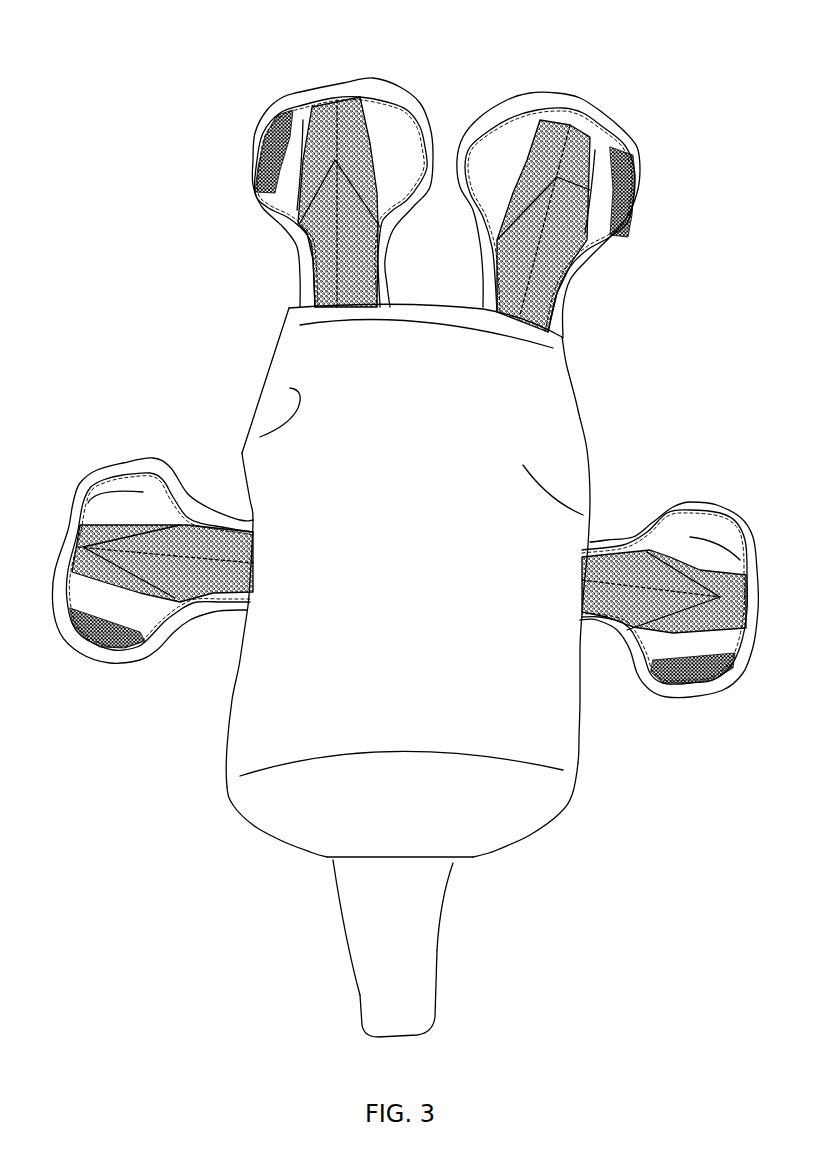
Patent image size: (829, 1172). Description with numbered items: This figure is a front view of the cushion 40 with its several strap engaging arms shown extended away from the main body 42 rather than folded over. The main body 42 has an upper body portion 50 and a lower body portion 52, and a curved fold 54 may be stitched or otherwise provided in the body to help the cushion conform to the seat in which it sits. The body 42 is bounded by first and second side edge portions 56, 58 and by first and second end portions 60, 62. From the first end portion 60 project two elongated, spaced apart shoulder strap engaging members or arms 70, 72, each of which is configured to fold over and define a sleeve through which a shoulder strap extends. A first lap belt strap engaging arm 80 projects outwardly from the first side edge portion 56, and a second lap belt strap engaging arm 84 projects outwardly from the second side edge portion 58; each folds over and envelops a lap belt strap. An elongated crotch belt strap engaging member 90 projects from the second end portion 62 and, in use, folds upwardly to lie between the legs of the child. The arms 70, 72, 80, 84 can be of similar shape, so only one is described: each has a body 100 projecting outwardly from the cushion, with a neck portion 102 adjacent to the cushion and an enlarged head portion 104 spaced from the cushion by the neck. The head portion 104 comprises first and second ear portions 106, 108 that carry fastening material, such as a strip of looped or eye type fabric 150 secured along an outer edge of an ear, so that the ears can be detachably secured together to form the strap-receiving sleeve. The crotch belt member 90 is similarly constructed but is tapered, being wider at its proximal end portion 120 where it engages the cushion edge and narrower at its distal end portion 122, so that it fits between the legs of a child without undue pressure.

The cushion 40 is at (600, 346).
The main body 42 is at (550, 409).
The upper body portion 50 is at (580, 480).
The lower body portion 52 is at (533, 812).
The curved fold 54 is at (483, 752).
The first side edge portion 56 is at (565, 678).
The second side edge portion 58 is at (242, 748).
The first end portion 60 is at (427, 303).
The second end portion 62 is at (253, 823).
The first shoulder strap engaging member 70 is at (572, 199).
The second shoulder strap engaging member 72 is at (272, 145).
The first lap belt strap engaging member 80 is at (715, 535).
The second lap belt strap engaging member 84 is at (112, 485).
The crotch belt strap engaging member 90 is at (417, 949).
The body 100 is at (593, 118).
The neck portion 102 is at (558, 272).
The head portion 104 is at (517, 127).
The first ear portion 106 is at (638, 202).
The second ear portion 108 is at (473, 123).
The proximal end portion 120 is at (410, 860).
The distal end portion 122 is at (438, 1010).
The strip of looped fabric 150 is at (265, 182).